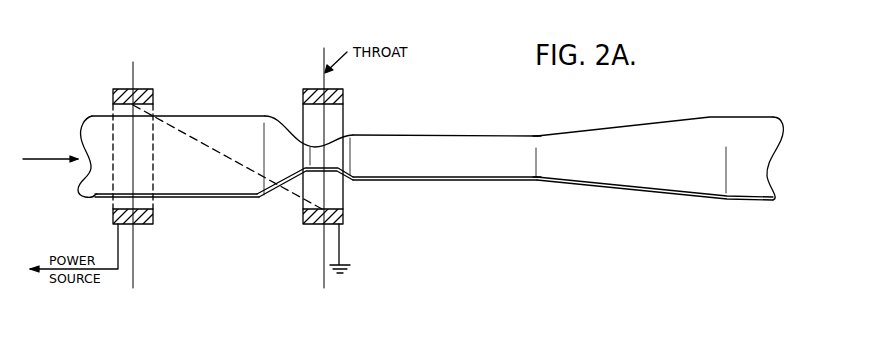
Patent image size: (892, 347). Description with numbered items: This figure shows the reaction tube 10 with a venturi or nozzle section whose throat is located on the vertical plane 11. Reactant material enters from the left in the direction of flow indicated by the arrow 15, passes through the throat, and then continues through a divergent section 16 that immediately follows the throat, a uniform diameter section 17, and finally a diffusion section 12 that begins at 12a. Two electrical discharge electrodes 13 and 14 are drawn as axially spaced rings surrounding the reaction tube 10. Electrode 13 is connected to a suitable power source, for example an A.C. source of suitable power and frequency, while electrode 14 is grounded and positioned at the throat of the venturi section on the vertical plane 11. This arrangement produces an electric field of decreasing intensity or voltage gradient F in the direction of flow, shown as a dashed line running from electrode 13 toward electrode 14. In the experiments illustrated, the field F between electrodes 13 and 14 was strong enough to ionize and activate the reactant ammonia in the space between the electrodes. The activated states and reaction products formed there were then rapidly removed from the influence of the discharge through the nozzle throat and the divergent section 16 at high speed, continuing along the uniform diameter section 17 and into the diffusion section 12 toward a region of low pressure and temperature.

The reaction tube 10 is at (223, 182).
The vertical plane 11 is at (323, 195).
The diffusion section 12 is at (648, 168).
The start of diffusion section 12a is at (537, 180).
The electrical discharge electrode 13 is at (118, 89).
The grounded electrode 14 is at (305, 89).
The flow direction arrow 15 is at (45, 162).
The divergent section 16 is at (339, 141).
The uniform diameter section 17 is at (465, 140).
The electric field F is at (212, 157).